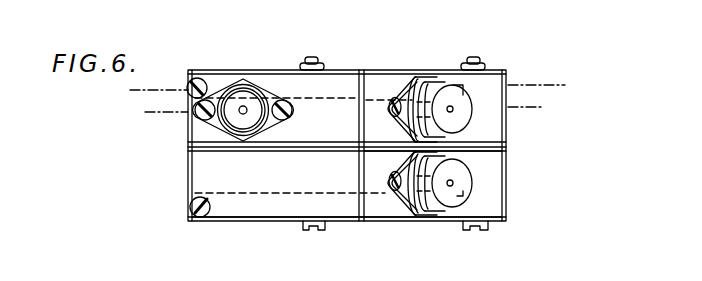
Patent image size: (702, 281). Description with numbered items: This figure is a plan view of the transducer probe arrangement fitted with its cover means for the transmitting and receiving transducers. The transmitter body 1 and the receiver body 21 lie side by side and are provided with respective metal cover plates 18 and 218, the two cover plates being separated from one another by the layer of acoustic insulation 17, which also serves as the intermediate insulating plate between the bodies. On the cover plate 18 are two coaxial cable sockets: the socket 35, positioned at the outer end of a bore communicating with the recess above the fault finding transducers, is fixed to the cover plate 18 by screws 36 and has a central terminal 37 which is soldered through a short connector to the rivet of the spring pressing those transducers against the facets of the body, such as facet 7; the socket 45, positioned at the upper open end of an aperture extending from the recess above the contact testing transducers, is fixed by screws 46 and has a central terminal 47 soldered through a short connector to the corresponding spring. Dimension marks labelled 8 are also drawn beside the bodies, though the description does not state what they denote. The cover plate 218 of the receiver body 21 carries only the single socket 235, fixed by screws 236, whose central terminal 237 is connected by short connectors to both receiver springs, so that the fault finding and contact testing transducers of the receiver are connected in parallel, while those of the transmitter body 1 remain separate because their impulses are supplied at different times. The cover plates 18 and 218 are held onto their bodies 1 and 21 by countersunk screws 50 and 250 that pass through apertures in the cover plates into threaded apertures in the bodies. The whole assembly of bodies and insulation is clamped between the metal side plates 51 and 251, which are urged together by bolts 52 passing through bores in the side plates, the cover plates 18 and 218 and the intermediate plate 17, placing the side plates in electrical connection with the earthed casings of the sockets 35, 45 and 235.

The transmitter body 1 is at (336, 99).
The facet 7 is at (152, 112).
The distance dimension 8 is at (138, 90).
The layer of acoustic insulation 17 is at (190, 150).
The cover plate 18 is at (492, 80).
The receiver body 21 is at (290, 179).
The socket 35 is at (473, 109).
The screws 36 is at (391, 108).
The central terminal 37 is at (450, 106).
The socket 45 is at (263, 85).
The screws 46 is at (291, 112).
The central terminal 47 is at (243, 106).
The countersunk screws 50 is at (195, 93).
The metal side plate 51 is at (335, 70).
The bolts 52 is at (311, 232).
The cover plate 218 is at (495, 209).
The socket 235 is at (473, 172).
The screws 236 is at (390, 180).
The central terminal 237 is at (450, 186).
The countersunk screws 250 is at (193, 222).
The metal side plate 251 is at (273, 219).